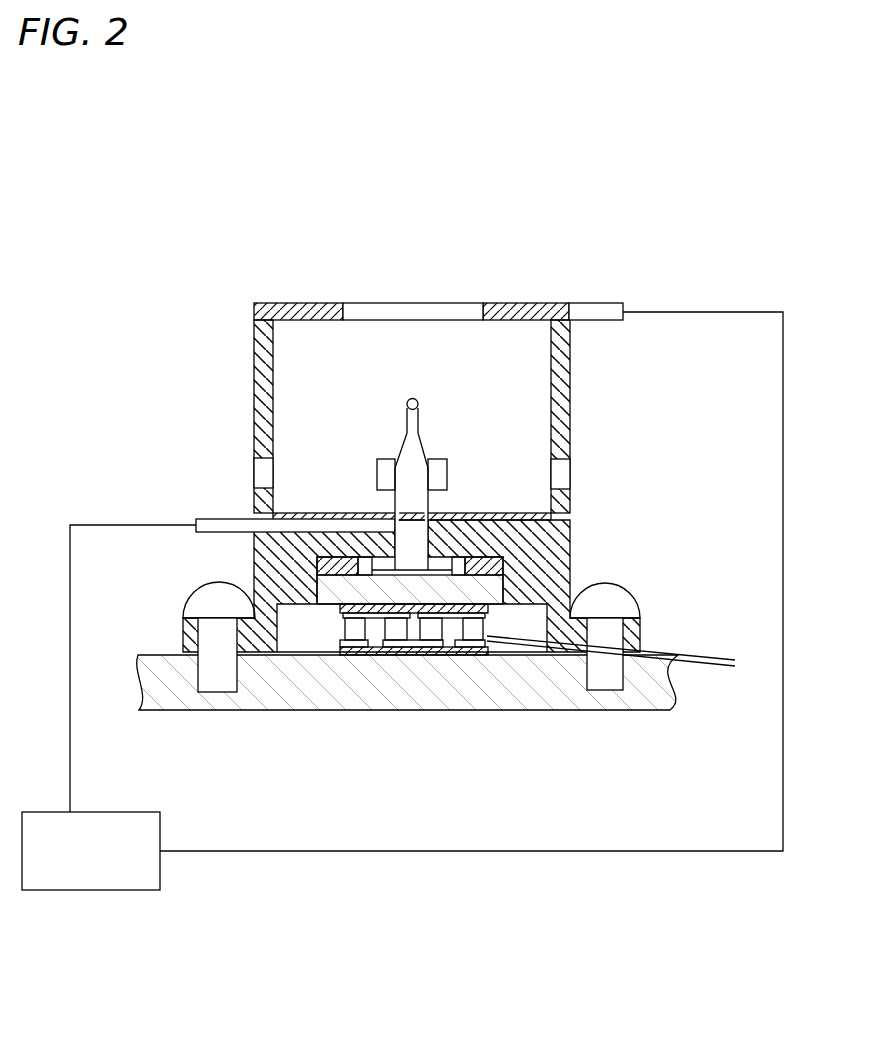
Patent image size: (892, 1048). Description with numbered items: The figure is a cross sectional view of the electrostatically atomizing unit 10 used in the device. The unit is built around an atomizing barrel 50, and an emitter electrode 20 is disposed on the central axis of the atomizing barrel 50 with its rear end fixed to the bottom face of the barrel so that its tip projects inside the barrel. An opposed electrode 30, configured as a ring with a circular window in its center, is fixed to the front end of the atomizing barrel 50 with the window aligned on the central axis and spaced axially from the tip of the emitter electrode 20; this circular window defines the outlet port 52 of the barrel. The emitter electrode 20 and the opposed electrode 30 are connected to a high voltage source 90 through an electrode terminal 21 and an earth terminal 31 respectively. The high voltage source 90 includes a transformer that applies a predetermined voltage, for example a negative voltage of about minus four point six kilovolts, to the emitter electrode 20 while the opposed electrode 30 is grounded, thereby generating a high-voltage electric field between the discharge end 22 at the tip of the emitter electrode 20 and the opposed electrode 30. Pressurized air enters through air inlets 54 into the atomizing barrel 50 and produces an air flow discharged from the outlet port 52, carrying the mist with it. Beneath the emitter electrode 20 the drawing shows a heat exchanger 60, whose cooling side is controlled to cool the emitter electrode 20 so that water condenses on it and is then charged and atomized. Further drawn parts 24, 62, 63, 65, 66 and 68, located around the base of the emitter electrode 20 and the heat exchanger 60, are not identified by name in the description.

The electrostatically atomizing unit 10 is at (410, 384).
The emitter electrode 20 is at (424, 450).
The electrode terminal 21 is at (232, 519).
The discharge end 22 is at (415, 399).
The container holder 24 is at (438, 565).
The opposed electrode 30 is at (254, 302).
The earth terminal 31 is at (597, 302).
The atomizing barrel 50 is at (572, 357).
The outlet port 52 is at (365, 303).
The air inlets 54 is at (256, 470).
The heat exchanger 60 is at (369, 683).
The piezoelectric elements 62 is at (437, 625).
The support plate 63 is at (330, 602).
The support block 65 is at (323, 572).
The actuator base plate 66 is at (363, 650).
The base 68 is at (400, 700).
The high voltage source 90 is at (91, 851).